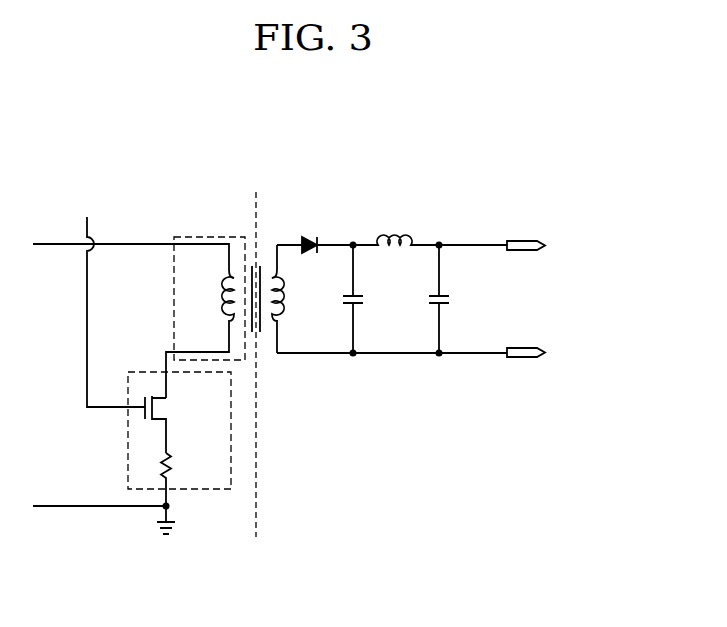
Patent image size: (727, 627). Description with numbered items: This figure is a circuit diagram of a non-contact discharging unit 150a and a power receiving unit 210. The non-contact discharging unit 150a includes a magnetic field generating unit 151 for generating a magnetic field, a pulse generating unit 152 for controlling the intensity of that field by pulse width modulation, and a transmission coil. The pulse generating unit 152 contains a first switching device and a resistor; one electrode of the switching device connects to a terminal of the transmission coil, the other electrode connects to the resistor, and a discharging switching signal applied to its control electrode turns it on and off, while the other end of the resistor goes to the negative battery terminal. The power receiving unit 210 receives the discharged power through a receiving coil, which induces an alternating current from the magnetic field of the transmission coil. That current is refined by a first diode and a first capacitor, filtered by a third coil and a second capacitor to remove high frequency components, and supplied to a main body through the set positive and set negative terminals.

The non-contact discharging unit 150a is at (151, 177).
The magnetic field generating unit 151 is at (200, 236).
The pulse generating unit 152 is at (145, 370).
The power receiving unit 210 is at (333, 190).